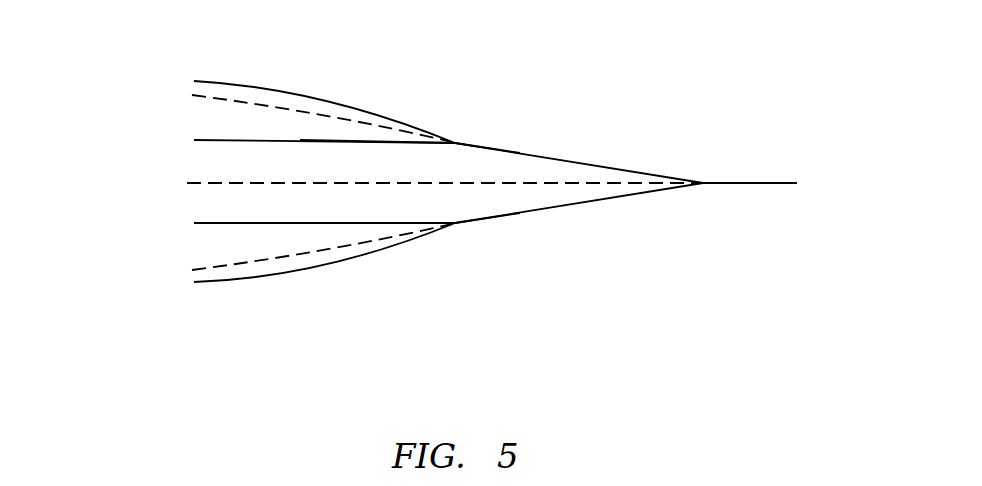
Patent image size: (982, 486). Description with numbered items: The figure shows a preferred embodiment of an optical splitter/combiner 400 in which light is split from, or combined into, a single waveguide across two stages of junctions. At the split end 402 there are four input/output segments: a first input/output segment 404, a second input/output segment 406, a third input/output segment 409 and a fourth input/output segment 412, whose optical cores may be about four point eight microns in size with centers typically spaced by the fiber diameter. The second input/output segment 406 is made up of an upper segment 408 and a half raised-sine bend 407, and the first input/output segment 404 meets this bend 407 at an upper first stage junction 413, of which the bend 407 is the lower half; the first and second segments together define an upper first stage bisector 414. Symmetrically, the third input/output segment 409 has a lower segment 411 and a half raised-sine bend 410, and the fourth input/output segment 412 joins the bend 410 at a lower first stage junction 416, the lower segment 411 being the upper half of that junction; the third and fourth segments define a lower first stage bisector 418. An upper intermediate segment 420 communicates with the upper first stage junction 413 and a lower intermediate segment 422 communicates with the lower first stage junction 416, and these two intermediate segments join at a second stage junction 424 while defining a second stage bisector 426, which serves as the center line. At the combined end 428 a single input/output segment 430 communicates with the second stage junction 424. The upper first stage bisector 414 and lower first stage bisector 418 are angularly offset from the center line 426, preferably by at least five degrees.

The optical splitter/combiner 400 is at (563, 298).
The split end 402 is at (120, 177).
The first input/output segment 404 is at (252, 83).
The second input/output segment 406 is at (268, 138).
The half raised-sine bend 407 is at (421, 137).
The upper segment 408 is at (344, 140).
The third input/output segment 409 is at (240, 223).
The half raised-sine bend 410 is at (421, 228).
The lower segment 411 is at (338, 223).
The fourth input/output segment 412 is at (220, 285).
The upper first stage junction 413 is at (465, 145).
The upper first stage bisector 414 is at (220, 100).
The lower first stage junction 416 is at (463, 222).
The lower first stage bisector 418 is at (222, 260).
The upper intermediate segment 420 is at (552, 160).
The lower intermediate segment 422 is at (555, 205).
The second stage junction 424 is at (717, 182).
The second stage bisector 426 is at (233, 182).
The combined end 428 is at (832, 187).
The input/output segment 430 is at (758, 185).